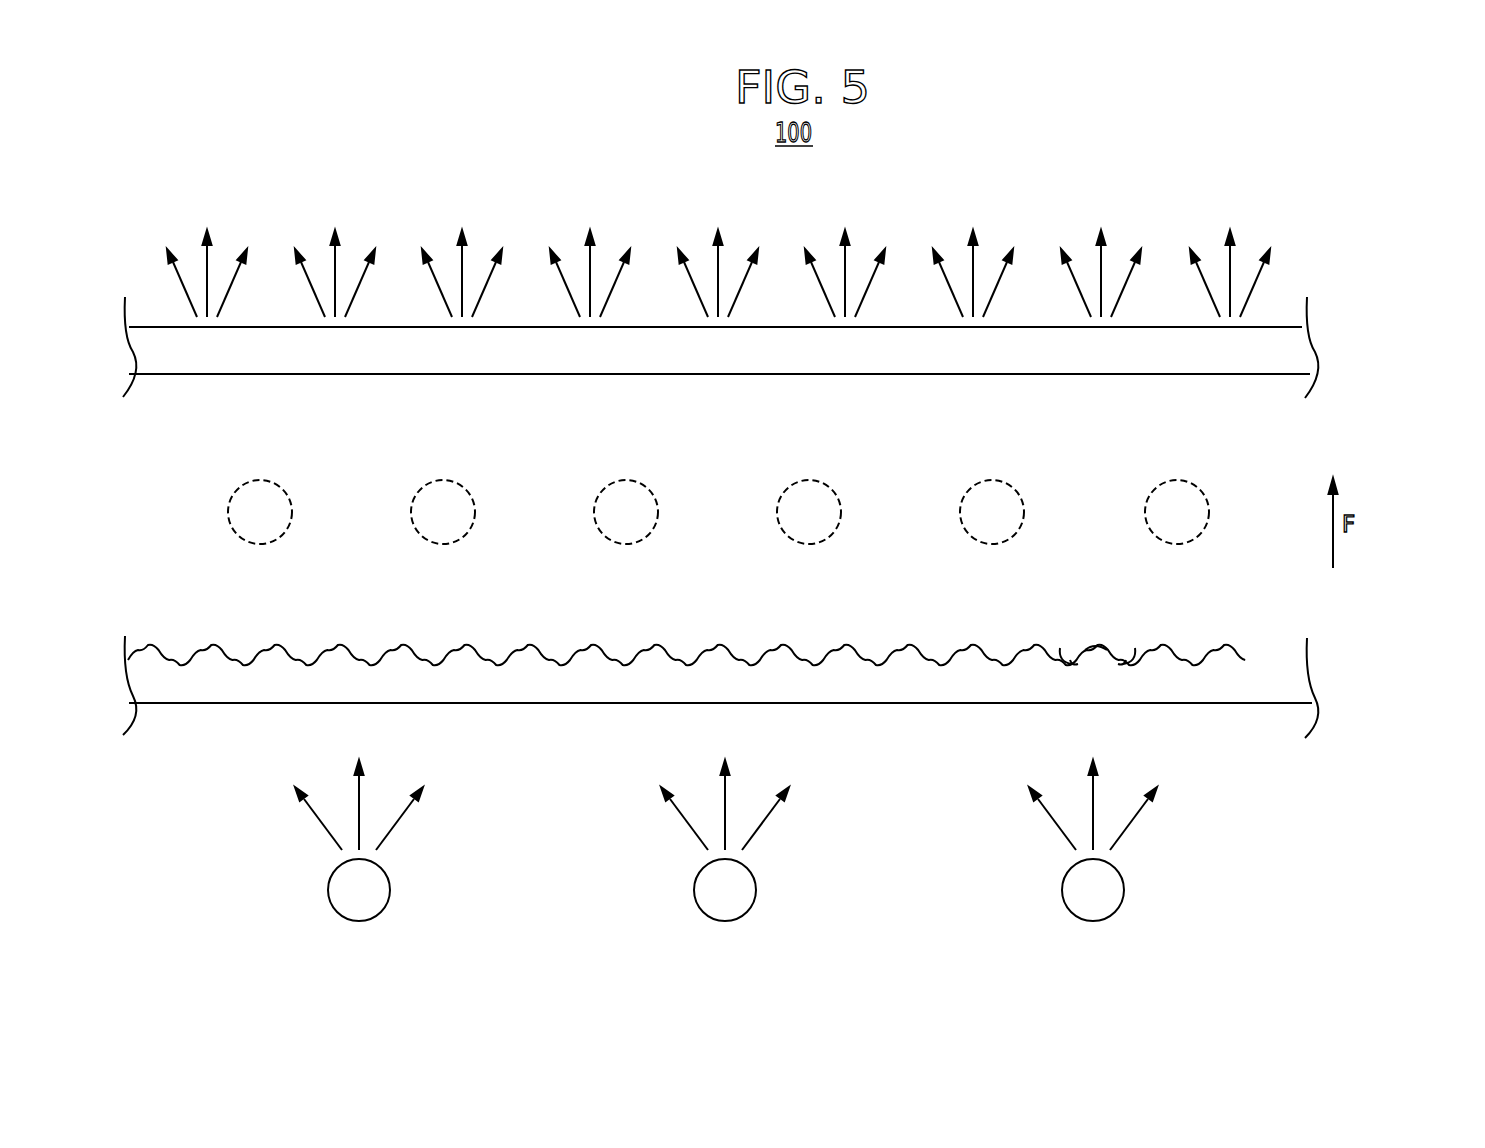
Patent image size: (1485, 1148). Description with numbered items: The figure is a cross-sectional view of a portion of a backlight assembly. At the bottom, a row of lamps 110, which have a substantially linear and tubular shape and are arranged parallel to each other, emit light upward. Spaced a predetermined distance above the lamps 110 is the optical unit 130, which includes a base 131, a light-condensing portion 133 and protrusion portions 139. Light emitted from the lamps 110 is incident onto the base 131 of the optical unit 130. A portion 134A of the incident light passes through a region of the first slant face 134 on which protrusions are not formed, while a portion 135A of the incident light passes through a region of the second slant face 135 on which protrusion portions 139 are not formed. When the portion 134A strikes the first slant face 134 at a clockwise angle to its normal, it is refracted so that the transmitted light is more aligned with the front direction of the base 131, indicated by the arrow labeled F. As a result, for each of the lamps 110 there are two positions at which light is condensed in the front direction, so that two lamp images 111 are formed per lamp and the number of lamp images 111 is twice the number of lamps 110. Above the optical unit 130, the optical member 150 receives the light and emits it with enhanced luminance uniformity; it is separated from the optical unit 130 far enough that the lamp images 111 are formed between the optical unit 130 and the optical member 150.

The light source 110 is at (1125, 892).
The lamp image 111 is at (1209, 512).
The optical unit 130 is at (797, 640).
The base 131 is at (1302, 680).
The light-condensing portion 133 is at (1108, 594).
The first slant face 134 is at (1070, 653).
The second slant face 135 is at (1152, 615).
The protrusion portion 139 is at (1085, 650).
The portion of incident light 134A is at (1085, 657).
The portion of incident light 135A is at (1112, 657).
The optical member 150 is at (1302, 352).